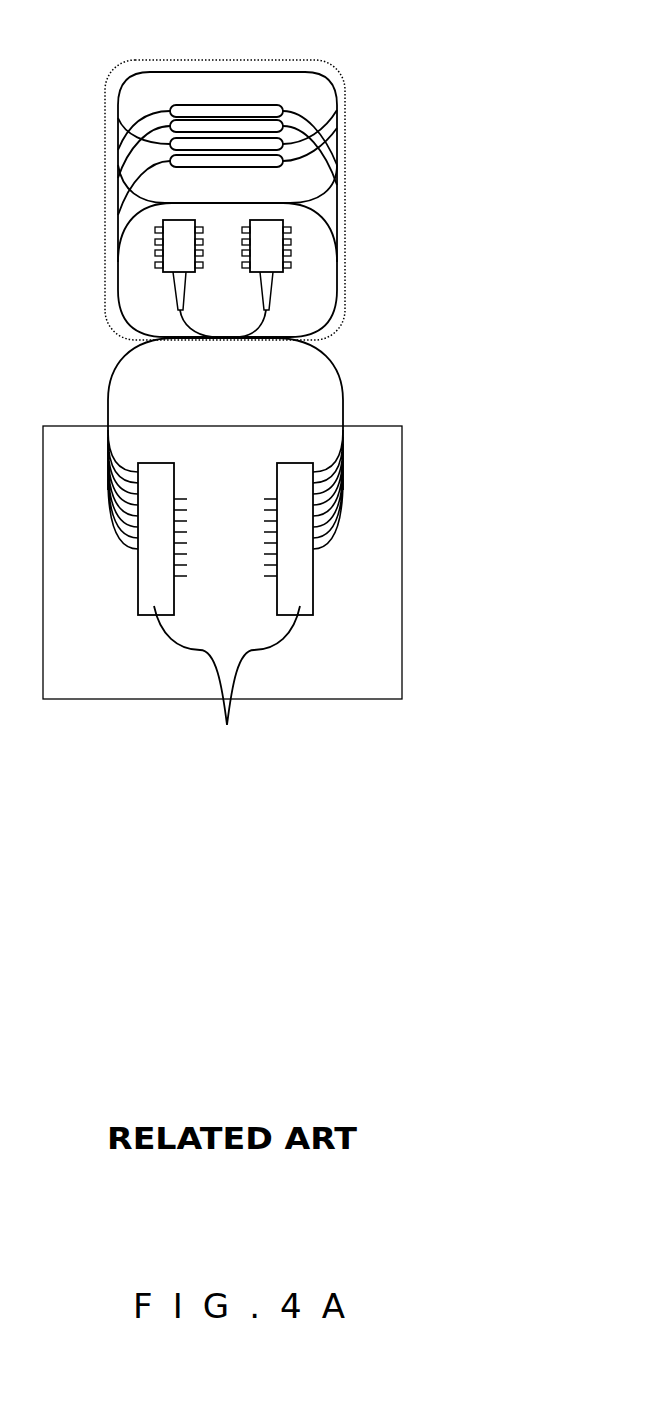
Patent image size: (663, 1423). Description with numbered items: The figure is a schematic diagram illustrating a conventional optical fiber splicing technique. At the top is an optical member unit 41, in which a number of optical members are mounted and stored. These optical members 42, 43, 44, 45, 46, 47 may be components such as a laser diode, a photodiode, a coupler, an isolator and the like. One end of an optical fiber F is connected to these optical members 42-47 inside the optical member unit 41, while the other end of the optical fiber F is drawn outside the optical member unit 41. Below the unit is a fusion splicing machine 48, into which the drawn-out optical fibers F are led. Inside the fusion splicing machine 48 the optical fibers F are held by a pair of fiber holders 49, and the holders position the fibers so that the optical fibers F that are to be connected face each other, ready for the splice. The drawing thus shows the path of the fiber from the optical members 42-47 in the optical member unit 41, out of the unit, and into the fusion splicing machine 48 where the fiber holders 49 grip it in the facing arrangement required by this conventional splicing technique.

The optical member unit 41 is at (362, 70).
The optical member 42 is at (168, 246).
The optical member 43 is at (275, 248).
The optical member 44 is at (181, 110).
The optical member 45 is at (205, 128).
The optical member 46 is at (230, 143).
The optical member 47 is at (258, 160).
The optical fiber F is at (338, 204).
The fusion splicing machine 48 is at (402, 567).
The fiber holder 49 is at (227, 681).